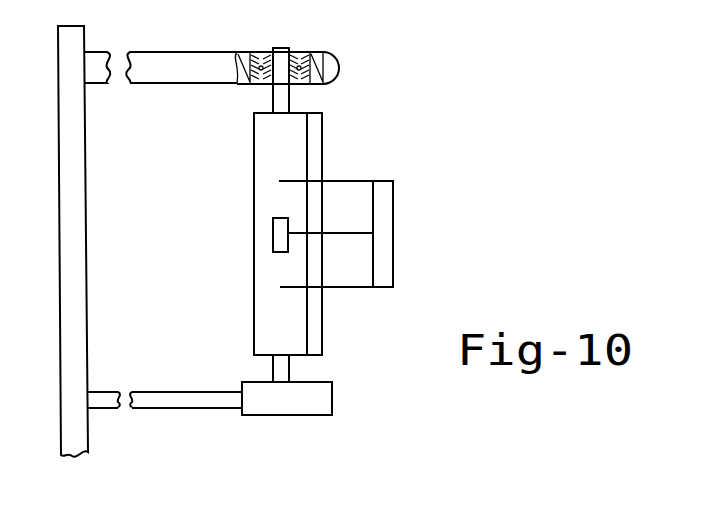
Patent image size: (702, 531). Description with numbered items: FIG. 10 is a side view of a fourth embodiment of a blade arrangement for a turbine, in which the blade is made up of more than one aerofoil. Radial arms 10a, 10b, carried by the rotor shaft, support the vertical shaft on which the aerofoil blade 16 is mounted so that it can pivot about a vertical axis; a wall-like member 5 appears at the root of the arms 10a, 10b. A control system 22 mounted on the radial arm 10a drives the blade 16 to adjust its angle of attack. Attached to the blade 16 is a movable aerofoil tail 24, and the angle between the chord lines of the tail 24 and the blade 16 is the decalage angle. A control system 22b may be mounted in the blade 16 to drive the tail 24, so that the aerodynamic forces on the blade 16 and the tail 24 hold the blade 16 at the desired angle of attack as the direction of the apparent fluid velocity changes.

The wall panel 5 is at (70, 328).
The radial arm 10a is at (168, 398).
The radial arm 10b is at (153, 72).
The blade 16 is at (313, 133).
The control system 22 is at (300, 408).
The control system 22b is at (273, 232).
The aerofoil control surface (tail) 24 is at (385, 202).